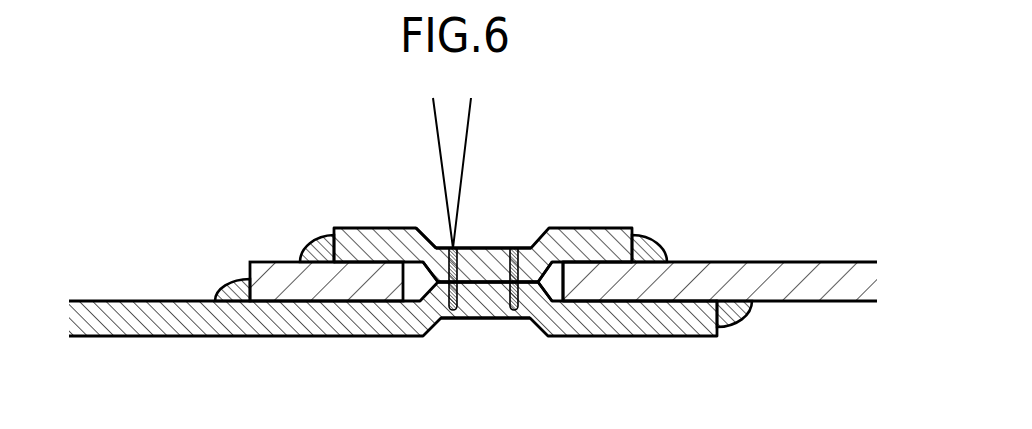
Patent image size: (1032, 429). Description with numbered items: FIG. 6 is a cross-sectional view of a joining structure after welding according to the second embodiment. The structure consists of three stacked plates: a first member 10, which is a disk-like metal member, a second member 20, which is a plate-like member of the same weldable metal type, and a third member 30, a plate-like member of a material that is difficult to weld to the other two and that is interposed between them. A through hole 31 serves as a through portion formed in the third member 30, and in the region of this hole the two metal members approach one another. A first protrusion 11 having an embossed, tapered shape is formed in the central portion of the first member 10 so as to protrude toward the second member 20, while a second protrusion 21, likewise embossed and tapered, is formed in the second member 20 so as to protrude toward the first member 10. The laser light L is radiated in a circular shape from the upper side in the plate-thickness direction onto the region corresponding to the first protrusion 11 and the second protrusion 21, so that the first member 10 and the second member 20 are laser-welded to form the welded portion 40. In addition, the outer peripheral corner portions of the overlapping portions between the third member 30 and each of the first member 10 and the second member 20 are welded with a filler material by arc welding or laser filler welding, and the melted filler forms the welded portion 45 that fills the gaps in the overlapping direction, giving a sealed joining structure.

The first member 10 is at (368, 228).
The first protrusion 11 is at (471, 284).
The second member 20 is at (158, 300).
The second protrusion 21 is at (497, 262).
The third member 30 is at (769, 262).
The through hole 31 is at (548, 272).
The welded portion 40 is at (434, 247).
The welded portion 45 is at (232, 281).
The laser light L is at (468, 126).